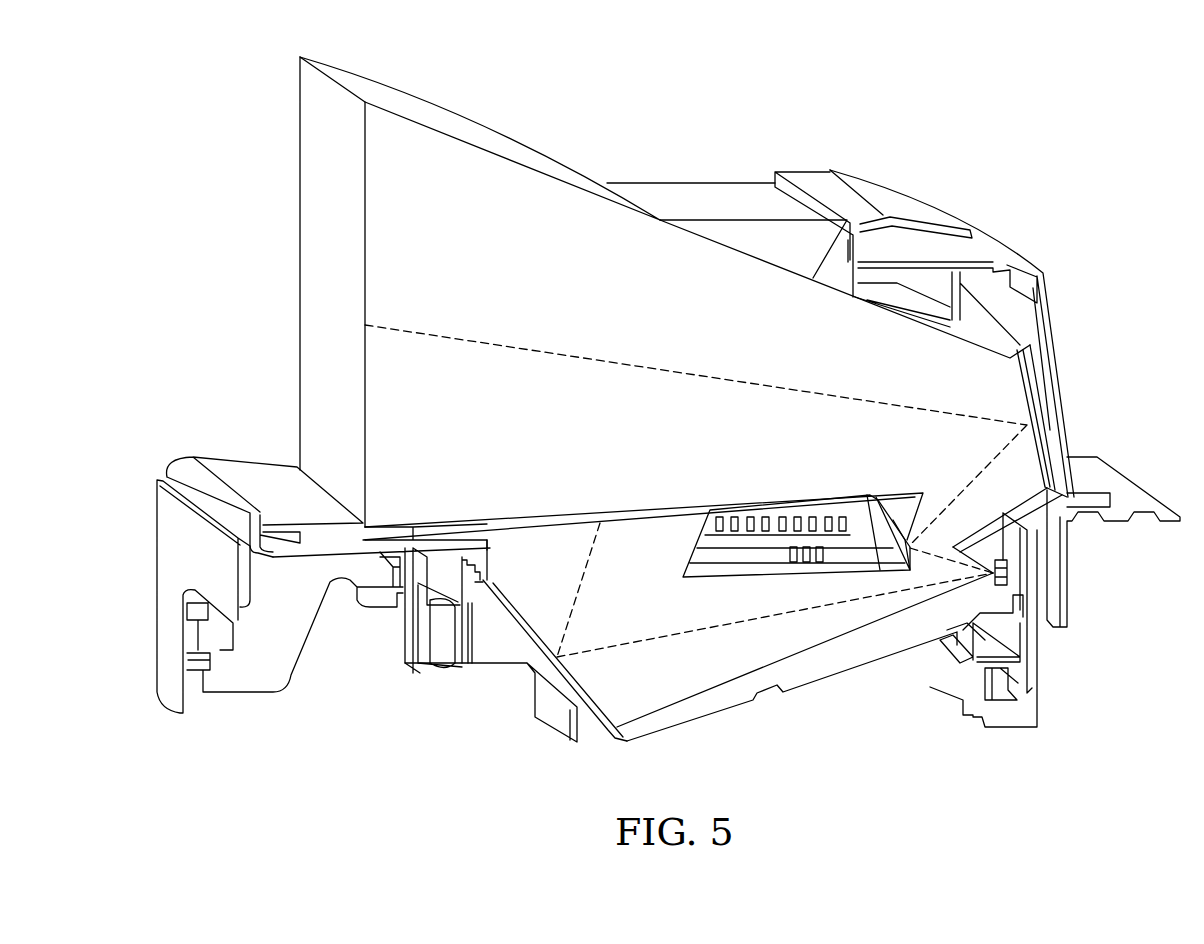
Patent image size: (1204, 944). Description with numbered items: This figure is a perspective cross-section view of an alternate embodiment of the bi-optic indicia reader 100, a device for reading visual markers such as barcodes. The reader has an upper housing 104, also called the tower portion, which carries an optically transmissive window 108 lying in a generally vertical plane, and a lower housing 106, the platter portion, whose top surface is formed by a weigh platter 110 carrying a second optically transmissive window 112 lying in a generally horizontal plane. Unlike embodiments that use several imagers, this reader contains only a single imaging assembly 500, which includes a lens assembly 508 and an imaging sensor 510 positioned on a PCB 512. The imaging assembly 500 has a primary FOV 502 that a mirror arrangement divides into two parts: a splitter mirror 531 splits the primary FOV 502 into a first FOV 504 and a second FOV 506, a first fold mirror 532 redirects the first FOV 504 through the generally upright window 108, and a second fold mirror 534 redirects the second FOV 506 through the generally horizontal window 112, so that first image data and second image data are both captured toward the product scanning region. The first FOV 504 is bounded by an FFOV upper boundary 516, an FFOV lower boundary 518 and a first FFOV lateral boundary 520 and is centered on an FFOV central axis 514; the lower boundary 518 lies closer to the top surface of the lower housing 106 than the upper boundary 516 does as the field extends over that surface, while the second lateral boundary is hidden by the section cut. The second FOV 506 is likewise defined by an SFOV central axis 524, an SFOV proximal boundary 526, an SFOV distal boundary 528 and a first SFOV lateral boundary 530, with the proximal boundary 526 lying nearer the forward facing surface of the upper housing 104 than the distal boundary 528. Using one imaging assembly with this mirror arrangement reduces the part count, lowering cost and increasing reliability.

The indicia reader 100 is at (792, 118).
The upper housing 104 is at (897, 183).
The lower housing 106 is at (243, 682).
The window 108 is at (848, 262).
The weigh platter 110 is at (257, 477).
The window 112 is at (416, 598).
The imaging assembly 500 is at (580, 124).
The primary FOV 502 is at (933, 594).
The first FOV 504 is at (712, 386).
The second FOV 506 is at (805, 657).
The lens assembly 508 is at (1040, 612).
The imaging sensor 510 is at (1010, 573).
The PCB 512 is at (1027, 542).
The FFOV central axis 514 is at (493, 345).
The FFOV upper boundary 516 is at (390, 108).
The FFOV lower boundary 518 is at (342, 504).
The first FFOV lateral boundary 520 is at (332, 292).
The SFOV central axis 524 is at (615, 650).
The SFOV proximal boundary 526 is at (693, 548).
The SFOV distal boundary 528 is at (650, 208).
The first SFOV lateral boundary 530 is at (753, 233).
The splitter mirror 531 is at (910, 542).
The first fold mirror 532 is at (1025, 403).
The second fold mirror 534 is at (595, 737).